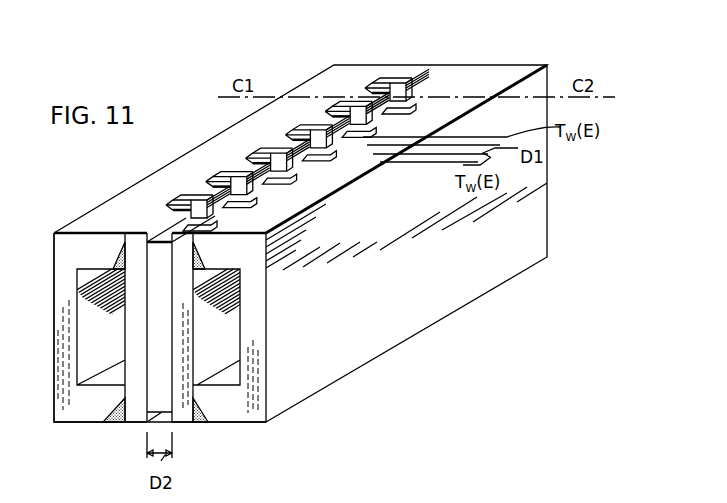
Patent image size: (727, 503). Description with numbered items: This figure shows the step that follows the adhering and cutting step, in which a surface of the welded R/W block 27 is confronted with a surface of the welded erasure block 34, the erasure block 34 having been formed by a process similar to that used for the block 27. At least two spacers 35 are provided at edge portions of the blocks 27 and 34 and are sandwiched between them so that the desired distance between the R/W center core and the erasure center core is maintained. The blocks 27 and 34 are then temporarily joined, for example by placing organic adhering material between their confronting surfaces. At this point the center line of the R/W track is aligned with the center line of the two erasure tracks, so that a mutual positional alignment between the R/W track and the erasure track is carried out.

The welded R/W block 27 is at (62, 372).
The welded erasure block 34 is at (258, 390).
The spacer 35 is at (172, 393).